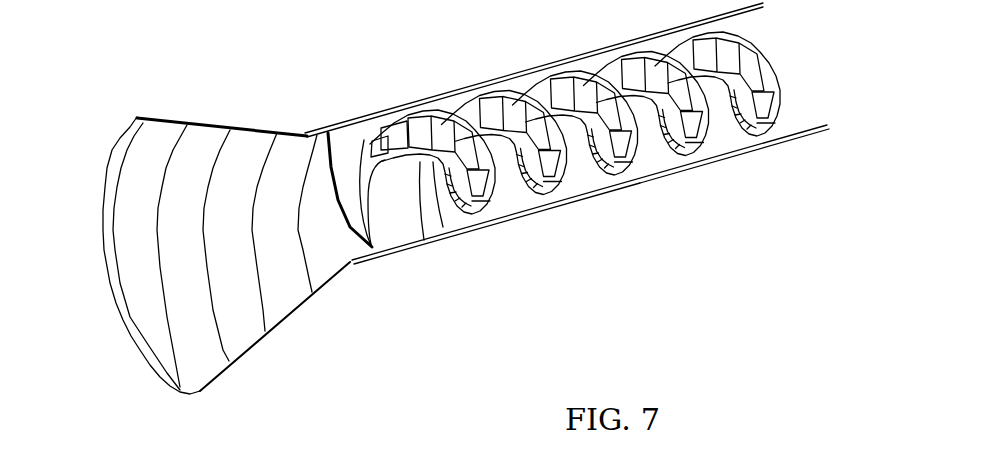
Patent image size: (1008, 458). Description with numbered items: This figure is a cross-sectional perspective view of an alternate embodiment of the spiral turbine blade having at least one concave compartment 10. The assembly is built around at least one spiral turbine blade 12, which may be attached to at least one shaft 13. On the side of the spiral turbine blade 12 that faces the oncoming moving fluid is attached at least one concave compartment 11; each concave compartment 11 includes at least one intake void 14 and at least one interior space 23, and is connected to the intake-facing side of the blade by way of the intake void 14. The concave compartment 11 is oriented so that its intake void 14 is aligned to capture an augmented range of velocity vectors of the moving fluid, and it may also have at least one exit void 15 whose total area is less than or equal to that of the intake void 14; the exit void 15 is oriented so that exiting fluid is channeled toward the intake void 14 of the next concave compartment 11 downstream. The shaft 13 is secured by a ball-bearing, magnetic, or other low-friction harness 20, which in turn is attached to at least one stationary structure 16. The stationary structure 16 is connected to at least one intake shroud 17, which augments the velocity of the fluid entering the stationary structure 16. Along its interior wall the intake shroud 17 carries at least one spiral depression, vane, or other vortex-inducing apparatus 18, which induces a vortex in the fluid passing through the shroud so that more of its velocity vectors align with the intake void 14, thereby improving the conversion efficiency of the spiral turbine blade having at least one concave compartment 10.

The spiral turbine blade having at least one concave compartment 10 is at (568, 217).
The concave compartment 11 is at (479, 163).
The spiral turbine blade 12 is at (447, 165).
The shaft 13 is at (664, 165).
The intake void 14 is at (705, 137).
The exit void 15 is at (765, 113).
The stationary structure 16 is at (520, 230).
The intake shroud 17 is at (250, 367).
The vortex-inducing apparatus 18 is at (248, 255).
The low-friction harness 20 is at (690, 167).
The interior space 23 is at (635, 180).